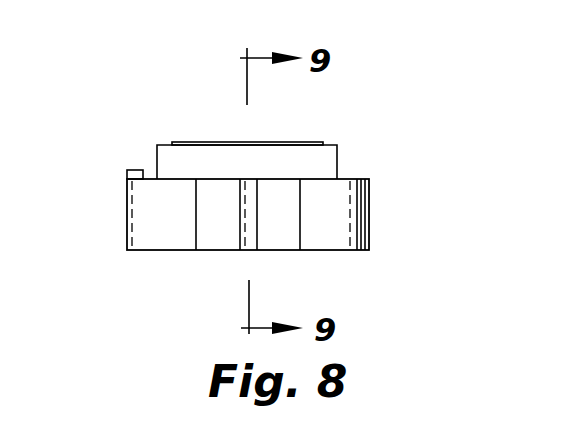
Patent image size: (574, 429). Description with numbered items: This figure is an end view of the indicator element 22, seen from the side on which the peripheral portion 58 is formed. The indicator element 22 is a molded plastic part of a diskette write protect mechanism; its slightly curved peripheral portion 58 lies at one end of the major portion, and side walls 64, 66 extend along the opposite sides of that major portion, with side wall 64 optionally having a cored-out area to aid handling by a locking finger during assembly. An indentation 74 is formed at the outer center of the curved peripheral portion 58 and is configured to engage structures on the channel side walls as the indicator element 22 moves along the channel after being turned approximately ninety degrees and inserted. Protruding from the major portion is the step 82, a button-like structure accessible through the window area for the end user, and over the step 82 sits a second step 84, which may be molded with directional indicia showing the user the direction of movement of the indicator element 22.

The indicator element 22 is at (264, 178).
The peripheral portion 58 is at (333, 243).
The side wall 64 is at (369, 210).
The side wall 66 is at (127, 200).
The indentation 74 is at (250, 251).
The step 82 is at (337, 152).
The second step 84 is at (213, 142).